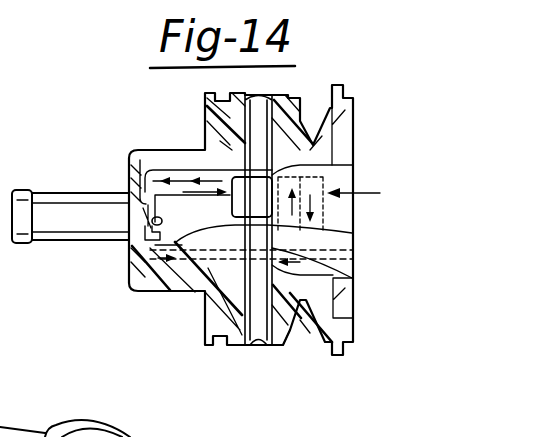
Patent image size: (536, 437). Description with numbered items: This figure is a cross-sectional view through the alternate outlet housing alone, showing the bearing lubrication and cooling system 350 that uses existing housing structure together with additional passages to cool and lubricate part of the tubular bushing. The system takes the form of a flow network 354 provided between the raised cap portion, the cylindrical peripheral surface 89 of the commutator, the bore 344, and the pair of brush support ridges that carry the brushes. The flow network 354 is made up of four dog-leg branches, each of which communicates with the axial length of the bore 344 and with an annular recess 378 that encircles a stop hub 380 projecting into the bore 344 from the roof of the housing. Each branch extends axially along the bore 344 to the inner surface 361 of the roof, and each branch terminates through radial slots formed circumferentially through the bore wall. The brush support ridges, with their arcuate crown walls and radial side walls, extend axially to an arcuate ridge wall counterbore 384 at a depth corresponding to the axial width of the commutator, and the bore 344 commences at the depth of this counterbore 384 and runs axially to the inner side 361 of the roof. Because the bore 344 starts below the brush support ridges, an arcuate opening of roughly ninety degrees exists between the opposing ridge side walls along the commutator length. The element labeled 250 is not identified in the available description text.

The bearing lubrication and cooling system 350 is at (165, 294).
The inner surface of the roof 361 is at (148, 262).
The flow network 354 is at (169, 187).
The bore 344 is at (352, 233).
The arcuate ridge wall counterbore 384 is at (352, 278).
The stop hub 380 is at (152, 218).
The annular recess 378 is at (153, 217).
The conduit tube 250 is at (42, 247).
The cylindrical peripheral surface of the commutator 89 is at (294, 347).